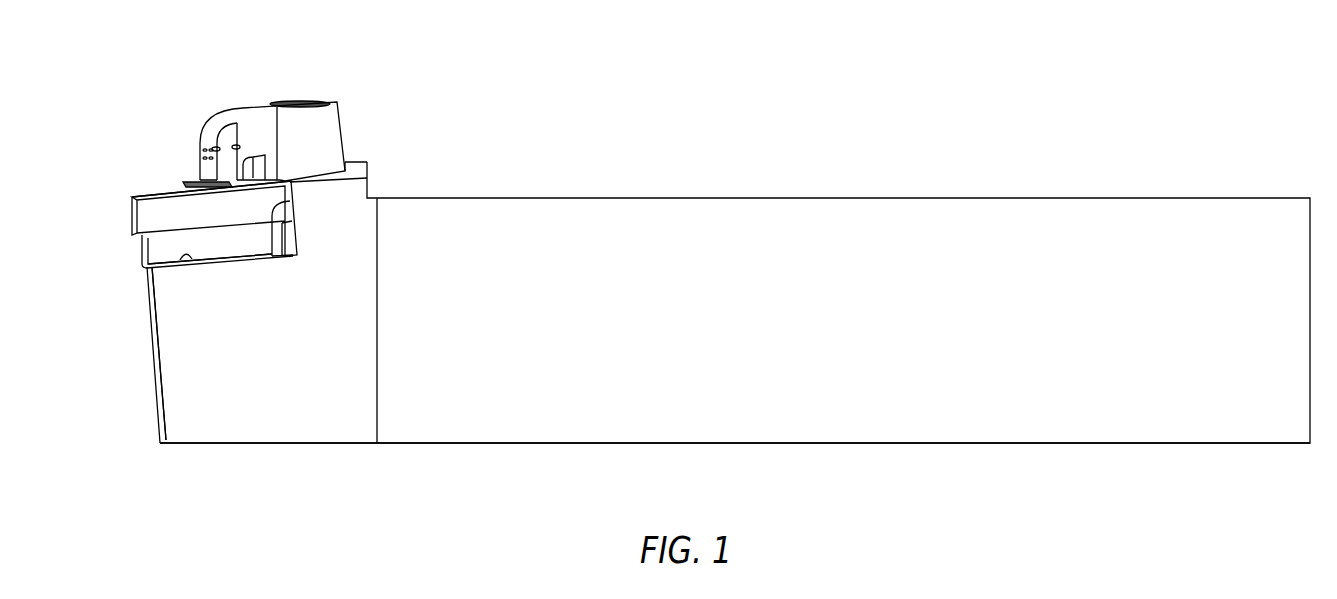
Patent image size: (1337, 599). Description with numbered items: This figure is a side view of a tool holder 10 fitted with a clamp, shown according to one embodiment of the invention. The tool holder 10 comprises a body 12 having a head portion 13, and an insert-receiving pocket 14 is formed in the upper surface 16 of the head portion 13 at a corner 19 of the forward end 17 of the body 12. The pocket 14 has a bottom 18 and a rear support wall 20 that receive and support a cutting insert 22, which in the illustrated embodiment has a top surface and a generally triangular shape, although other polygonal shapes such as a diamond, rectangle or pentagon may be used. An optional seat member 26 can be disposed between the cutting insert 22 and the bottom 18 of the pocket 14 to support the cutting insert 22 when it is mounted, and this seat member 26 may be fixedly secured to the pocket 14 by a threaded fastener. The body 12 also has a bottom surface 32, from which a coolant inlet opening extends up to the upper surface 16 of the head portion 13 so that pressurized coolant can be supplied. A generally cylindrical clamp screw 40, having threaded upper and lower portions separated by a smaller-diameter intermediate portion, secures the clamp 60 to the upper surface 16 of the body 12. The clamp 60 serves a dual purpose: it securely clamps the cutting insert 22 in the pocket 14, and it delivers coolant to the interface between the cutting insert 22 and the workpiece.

The tool holder 10 is at (945, 106).
The body 12 is at (667, 219).
The head portion 13 is at (131, 173).
The insert-receiving pocket 14 is at (134, 253).
The upper surface 16 is at (358, 166).
The forward end 17 is at (139, 389).
The bottom 18 is at (190, 266).
The corner 19 is at (148, 357).
The rear support wall 20 is at (273, 257).
The cutting insert 22 is at (126, 207).
The seat member 26 is at (215, 247).
The bottom surface 32 is at (252, 443).
The clamp screw 40 is at (287, 104).
The clamp 60 is at (213, 111).